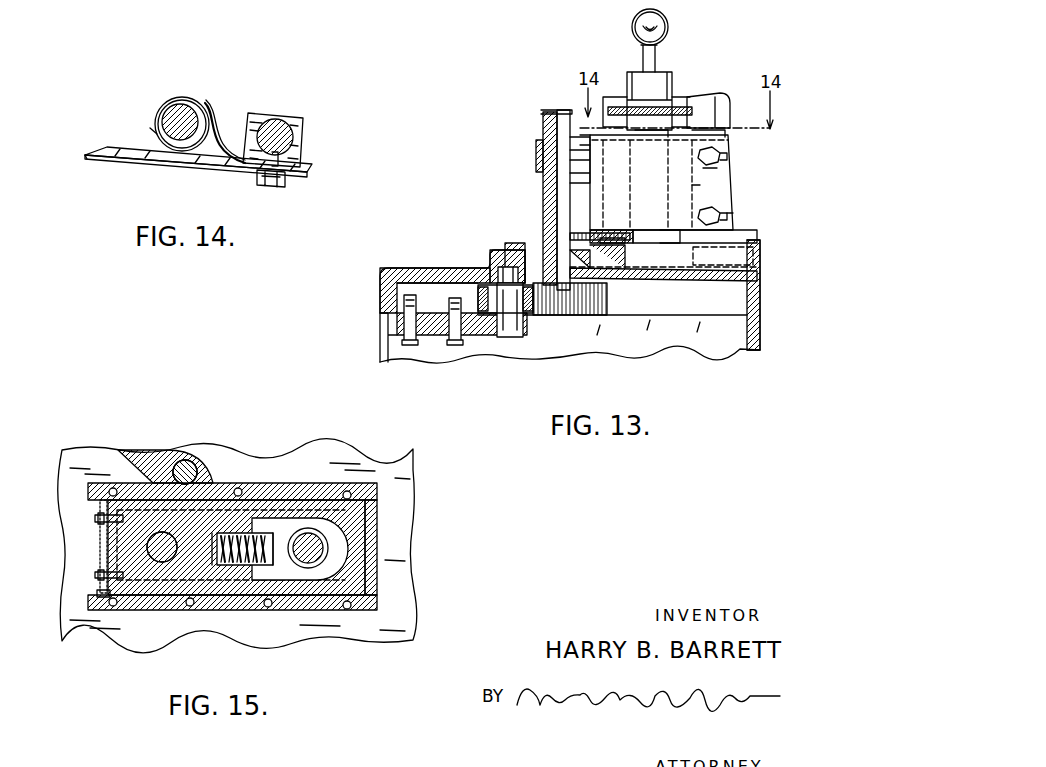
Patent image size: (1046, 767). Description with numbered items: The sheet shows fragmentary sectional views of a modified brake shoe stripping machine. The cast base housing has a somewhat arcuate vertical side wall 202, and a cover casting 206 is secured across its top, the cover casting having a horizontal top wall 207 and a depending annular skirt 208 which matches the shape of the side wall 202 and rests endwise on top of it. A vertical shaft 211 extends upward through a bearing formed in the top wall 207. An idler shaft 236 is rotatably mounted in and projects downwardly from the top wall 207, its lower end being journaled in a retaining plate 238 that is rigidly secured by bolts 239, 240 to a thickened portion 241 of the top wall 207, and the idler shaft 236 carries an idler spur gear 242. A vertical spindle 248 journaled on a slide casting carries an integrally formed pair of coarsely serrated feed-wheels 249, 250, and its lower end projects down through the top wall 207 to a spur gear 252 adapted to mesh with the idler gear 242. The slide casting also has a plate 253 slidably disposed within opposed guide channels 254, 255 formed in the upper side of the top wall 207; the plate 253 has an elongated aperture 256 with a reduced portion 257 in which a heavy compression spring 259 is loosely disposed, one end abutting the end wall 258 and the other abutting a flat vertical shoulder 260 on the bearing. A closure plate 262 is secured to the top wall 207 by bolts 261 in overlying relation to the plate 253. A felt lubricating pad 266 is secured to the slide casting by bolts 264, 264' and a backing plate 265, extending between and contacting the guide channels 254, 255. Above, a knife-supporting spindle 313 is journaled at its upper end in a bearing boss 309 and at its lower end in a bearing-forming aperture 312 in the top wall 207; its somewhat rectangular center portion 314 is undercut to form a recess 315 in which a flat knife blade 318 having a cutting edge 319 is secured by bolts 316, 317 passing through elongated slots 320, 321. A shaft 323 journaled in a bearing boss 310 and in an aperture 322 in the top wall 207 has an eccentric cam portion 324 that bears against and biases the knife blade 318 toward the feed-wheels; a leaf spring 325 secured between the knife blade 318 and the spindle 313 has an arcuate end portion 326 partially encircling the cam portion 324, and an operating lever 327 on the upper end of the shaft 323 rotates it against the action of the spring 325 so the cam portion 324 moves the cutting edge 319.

In FIG. 13, the side wall 202 is at (382, 352).
In FIG. 13, the cover casting 206 is at (767, 303).
In FIG. 13, the top wall 207 is at (445, 263).
In FIG. 13, the annular skirt 208 is at (747, 308).
In FIG. 15, the vertical shaft 211 is at (317, 548).
In FIG. 13, the idler shaft 236 is at (508, 340).
In FIG. 13, the retaining plate 238 is at (397, 327).
In FIG. 13, the bolt 239 is at (455, 345).
In FIG. 13, the bolt 240 is at (410, 345).
In FIG. 13, the thickened portion 241 is at (395, 288).
In FIG. 13, the idler spur gear 242 is at (528, 320).
In FIG. 13, the vertical spindle 248 is at (570, 112).
In FIG. 15, the vertical spindle 248 is at (165, 560).
In FIG. 13, the feed-wheel 249 is at (538, 195).
In FIG. 13, the feed-wheel 250 is at (536, 148).
In FIG. 13, the spur gear 252 is at (598, 318).
In FIG. 13, the plate 253 is at (613, 260).
In FIG. 15, the plate 253 is at (357, 535).
In FIG. 13, the guide channel 254 is at (505, 242).
In FIG. 15, the guide channel 254 is at (377, 497).
In FIG. 13, the guide channel 255 is at (628, 252).
In FIG. 15, the guide channel 255 is at (380, 605).
In FIG. 15, the elongated aperture 256 is at (340, 565).
In FIG. 15, the reduced portion 257 is at (240, 533).
In FIG. 15, the end wall 258 is at (208, 533).
In FIG. 15, the compression spring 259 is at (263, 533).
In FIG. 15, the shoulder 260 is at (283, 600).
In FIG. 13, the bolt 261 is at (515, 228).
In FIG. 13, the closure plate 262 is at (612, 238).
In FIG. 15, the bolt 264 is at (69, 512).
In FIG. 15, the bolt 264' is at (71, 579).
In FIG. 15, the backing plate 265 is at (100, 550).
In FIG. 15, the felt lubricating pad 266 is at (97, 597).
In FIG. 13, the bearing boss 309 is at (740, 62).
In FIG. 13, the bearing boss 310 is at (675, 97).
In FIG. 13, the bearing-forming aperture 312 is at (727, 257).
In FIG. 14, the knife-supporting spindle 313 is at (288, 113).
In FIG. 13, the knife-supporting spindle 313 is at (740, 267).
In FIG. 14, the rectangular center portion 314 is at (298, 130).
In FIG. 13, the rectangular center portion 314 is at (720, 235).
In FIG. 14, the recess 315 is at (298, 152).
In FIG. 14, the bolt 316 is at (283, 182).
In FIG. 13, the bolt 316 is at (720, 153).
In FIG. 14, the bolt 317 is at (271, 176).
In FIG. 13, the bolt 317 is at (730, 220).
In FIG. 14, the knife blade 318 is at (155, 157).
In FIG. 13, the knife blade 318 is at (700, 185).
In FIG. 14, the cutting edge 319 is at (85, 155).
In FIG. 13, the elongated slot 320 is at (722, 160).
In FIG. 13, the elongated slot 321 is at (717, 213).
In FIG. 13, the bearing-forming aperture 322 is at (757, 250).
In FIG. 15, the bearing-forming aperture 322 is at (182, 462).
In FIG. 14, the shaft 323 is at (173, 112).
In FIG. 13, the shaft 323 is at (673, 280).
In FIG. 15, the shaft 323 is at (180, 462).
In FIG. 14, the eccentric cam portion 324 is at (150, 128).
In FIG. 13, the eccentric cam portion 324 is at (670, 230).
In FIG. 14, the leaf spring 325 is at (208, 117).
In FIG. 14, the arcuate end portion 326 is at (183, 100).
In FIG. 13, the operating lever 327 is at (650, 53).